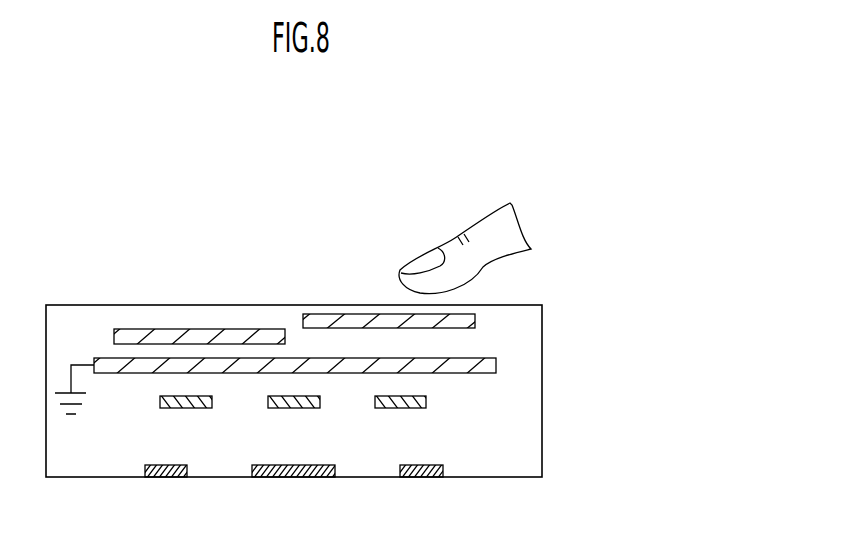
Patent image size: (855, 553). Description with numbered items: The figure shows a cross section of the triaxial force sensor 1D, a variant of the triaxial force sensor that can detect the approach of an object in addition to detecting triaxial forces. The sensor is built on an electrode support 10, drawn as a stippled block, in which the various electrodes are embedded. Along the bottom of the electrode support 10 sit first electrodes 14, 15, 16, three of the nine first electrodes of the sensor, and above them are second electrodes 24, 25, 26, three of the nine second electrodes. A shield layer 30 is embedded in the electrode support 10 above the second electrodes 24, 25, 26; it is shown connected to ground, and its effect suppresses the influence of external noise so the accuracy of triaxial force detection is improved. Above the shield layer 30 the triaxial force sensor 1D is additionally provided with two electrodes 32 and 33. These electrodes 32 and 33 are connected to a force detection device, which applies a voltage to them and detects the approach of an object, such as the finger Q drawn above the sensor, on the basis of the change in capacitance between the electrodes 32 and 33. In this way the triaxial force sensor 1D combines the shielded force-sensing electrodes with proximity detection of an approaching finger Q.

The electrode support 10 is at (242, 305).
The shield layer 30 is at (101, 356).
The electrode 32 is at (155, 329).
The electrode 33 is at (352, 313).
The second electrode 24 is at (167, 409).
The second electrode 25 is at (282, 409).
The second electrode 26 is at (408, 409).
The first electrode 14 is at (153, 478).
The first electrode 15 is at (280, 478).
The first electrode 16 is at (415, 478).
The finger Q is at (482, 217).
The triaxial force sensor 1D is at (512, 152).